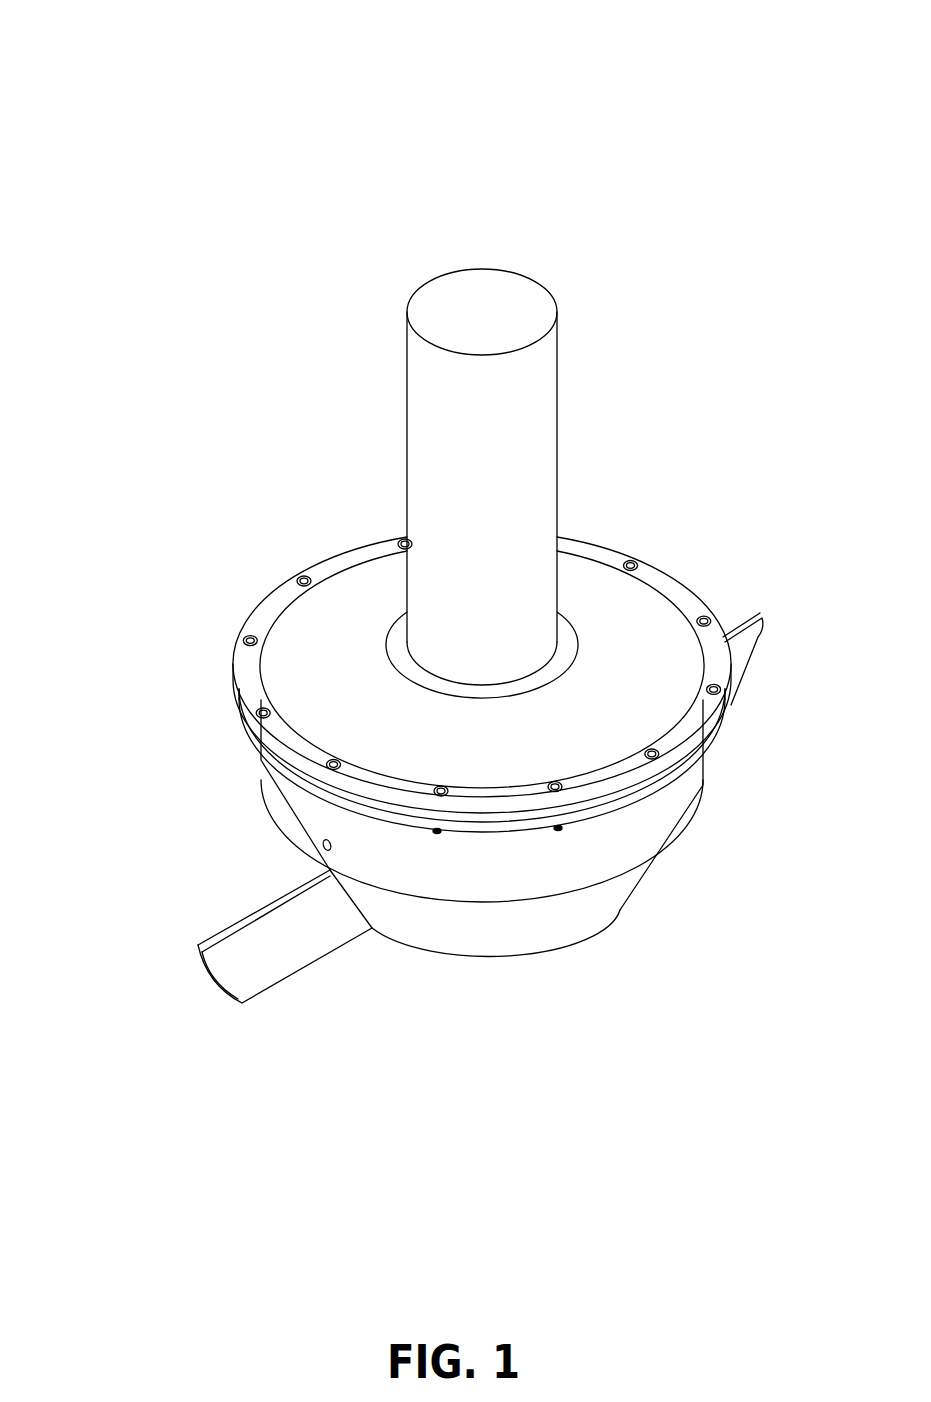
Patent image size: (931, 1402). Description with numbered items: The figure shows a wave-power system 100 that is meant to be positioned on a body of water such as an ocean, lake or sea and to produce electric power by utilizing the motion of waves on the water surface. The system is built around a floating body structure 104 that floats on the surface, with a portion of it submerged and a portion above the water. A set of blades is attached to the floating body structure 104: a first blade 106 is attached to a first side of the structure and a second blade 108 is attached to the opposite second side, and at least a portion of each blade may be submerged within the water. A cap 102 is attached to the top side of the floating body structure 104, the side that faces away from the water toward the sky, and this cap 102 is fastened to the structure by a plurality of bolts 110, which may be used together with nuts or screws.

The wave-power system 100 is at (146, 48).
The cap 102 is at (610, 645).
The floating body structure 104 is at (685, 802).
The first blade 106 is at (308, 945).
The second blade 108 is at (758, 637).
The bolts 110 is at (250, 638).